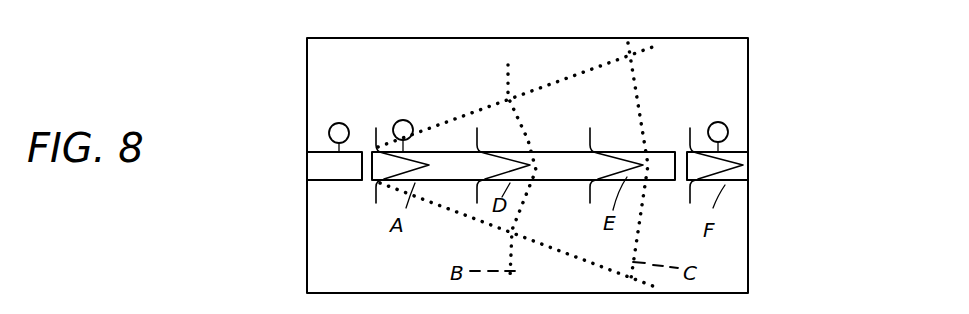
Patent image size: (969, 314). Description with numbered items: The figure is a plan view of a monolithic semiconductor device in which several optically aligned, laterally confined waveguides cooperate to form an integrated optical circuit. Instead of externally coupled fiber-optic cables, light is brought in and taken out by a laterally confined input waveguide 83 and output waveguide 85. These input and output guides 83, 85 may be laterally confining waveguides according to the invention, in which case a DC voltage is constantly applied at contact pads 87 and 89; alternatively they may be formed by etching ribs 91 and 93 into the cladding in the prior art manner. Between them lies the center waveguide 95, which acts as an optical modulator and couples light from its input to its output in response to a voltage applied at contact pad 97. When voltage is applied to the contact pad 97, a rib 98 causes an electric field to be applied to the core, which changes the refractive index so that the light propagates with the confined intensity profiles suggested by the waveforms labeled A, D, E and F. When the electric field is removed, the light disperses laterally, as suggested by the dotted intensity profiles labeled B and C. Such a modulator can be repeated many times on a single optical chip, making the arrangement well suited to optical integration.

The input waveguide 83 is at (345, 190).
The output waveguide 85 is at (738, 185).
The contact pad 87 is at (338, 123).
The contact pad 89 is at (718, 122).
The rib 91 is at (318, 168).
The rib 93 is at (735, 165).
The center waveguide 95 is at (436, 143).
The contact pad 97 is at (403, 120).
The rib 98 is at (558, 152).